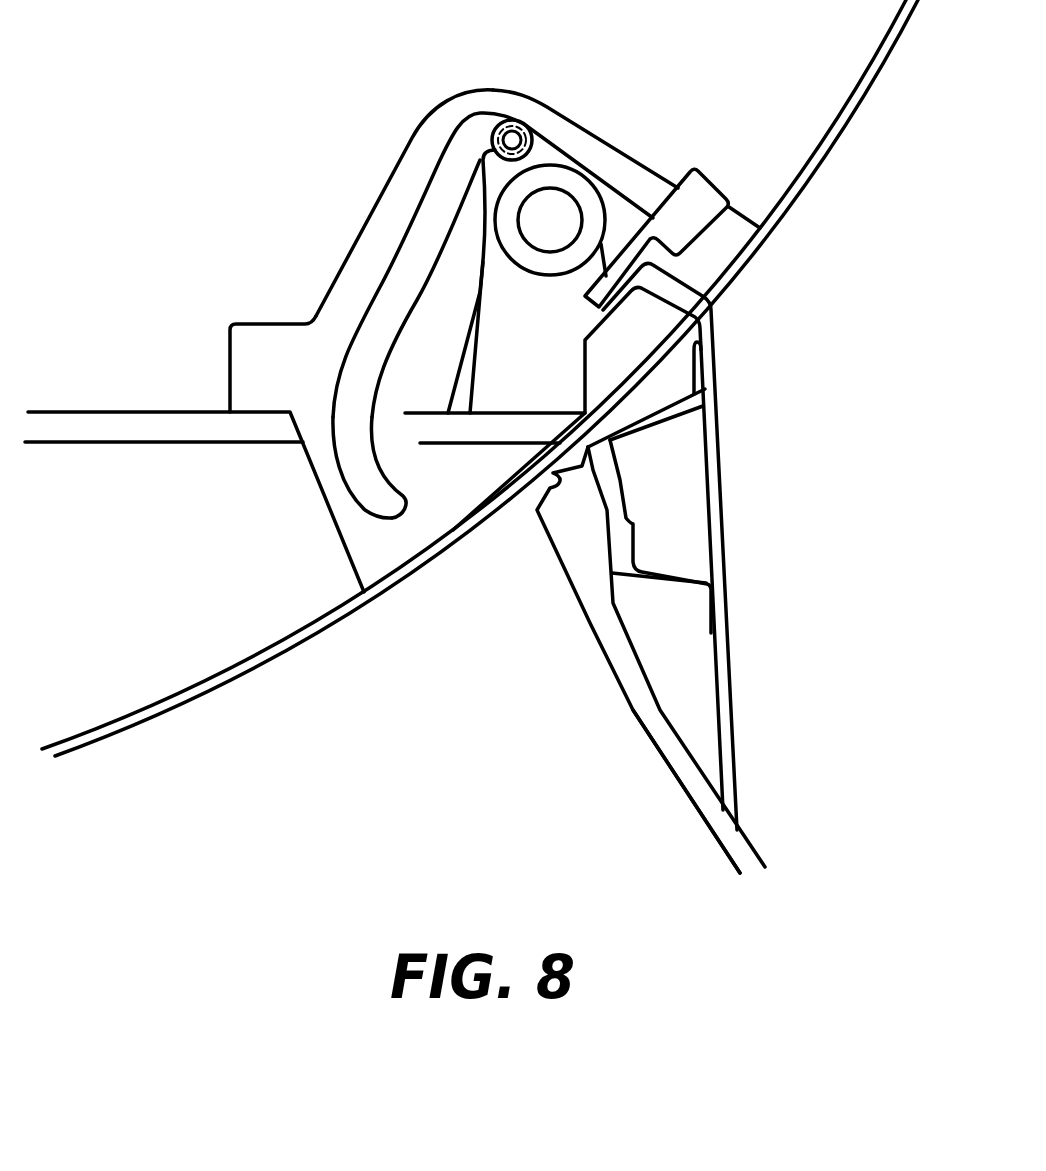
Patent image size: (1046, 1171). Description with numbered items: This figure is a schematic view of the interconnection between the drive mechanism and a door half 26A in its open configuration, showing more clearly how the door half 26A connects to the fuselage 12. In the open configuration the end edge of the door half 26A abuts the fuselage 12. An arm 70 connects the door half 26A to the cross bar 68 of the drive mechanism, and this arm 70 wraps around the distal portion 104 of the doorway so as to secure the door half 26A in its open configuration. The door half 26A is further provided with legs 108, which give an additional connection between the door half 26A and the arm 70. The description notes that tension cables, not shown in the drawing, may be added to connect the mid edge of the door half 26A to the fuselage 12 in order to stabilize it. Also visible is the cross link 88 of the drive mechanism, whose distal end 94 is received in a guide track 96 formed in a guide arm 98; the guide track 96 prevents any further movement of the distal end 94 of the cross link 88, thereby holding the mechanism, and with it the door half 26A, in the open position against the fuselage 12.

The fuselage 12 is at (268, 660).
The door half 26A is at (660, 755).
The cross bar 68 is at (697, 187).
The arm 70 is at (690, 284).
The cross link 88 is at (583, 157).
The distal end 94 is at (510, 135).
The guide track 96 is at (465, 150).
The guide arm 98 is at (378, 260).
The distal portion 104 is at (636, 337).
The legs 108 is at (657, 585).